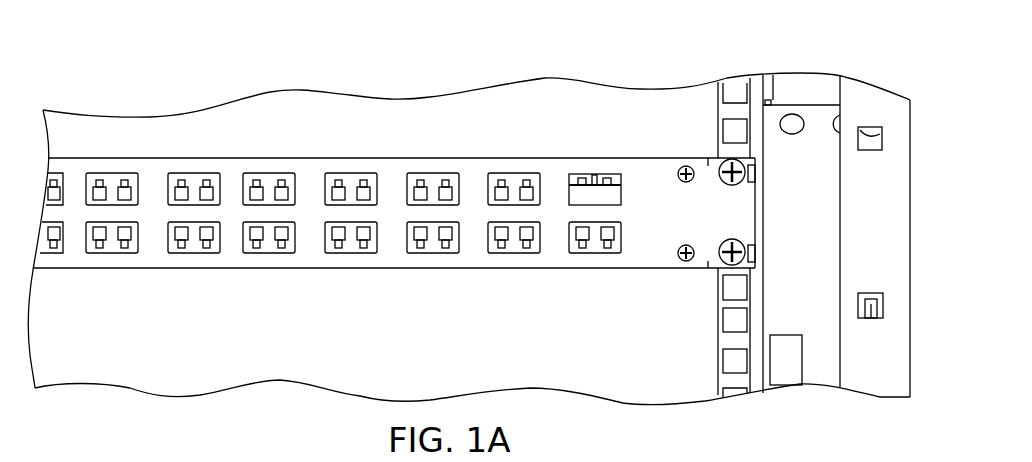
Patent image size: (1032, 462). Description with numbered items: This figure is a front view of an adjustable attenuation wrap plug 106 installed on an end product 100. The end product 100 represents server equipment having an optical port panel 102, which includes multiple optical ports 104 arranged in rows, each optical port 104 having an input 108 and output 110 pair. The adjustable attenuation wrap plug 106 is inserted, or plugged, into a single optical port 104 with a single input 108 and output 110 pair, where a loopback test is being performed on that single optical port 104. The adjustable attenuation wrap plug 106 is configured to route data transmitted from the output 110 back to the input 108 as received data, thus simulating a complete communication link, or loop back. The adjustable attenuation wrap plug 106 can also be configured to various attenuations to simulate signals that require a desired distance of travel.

The end product 100 is at (469, 208).
The optical port panel 102 is at (312, 148).
The optical ports 104 is at (572, 176).
The adjustable attenuation wrap plug 106 is at (606, 219).
The input 108 is at (582, 177).
The output 110 is at (608, 177).